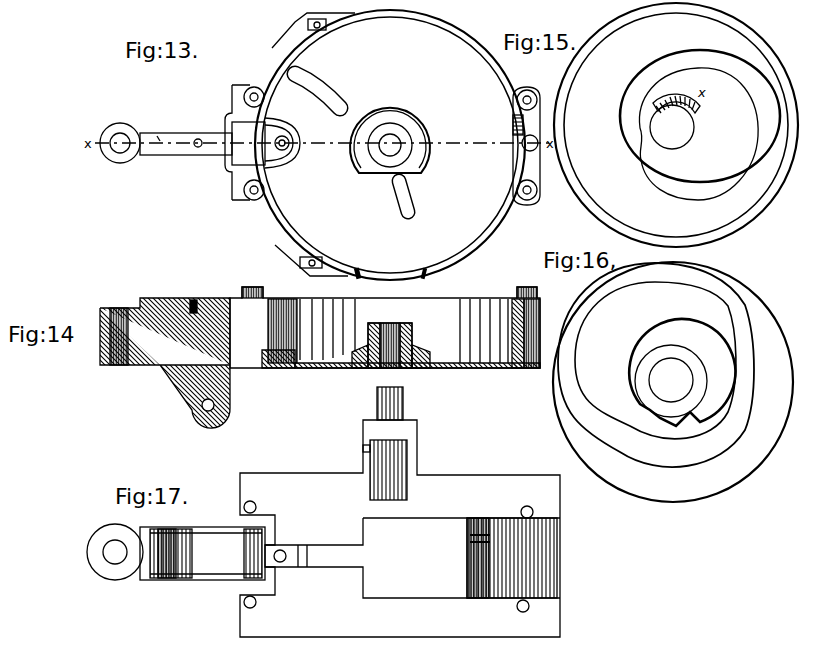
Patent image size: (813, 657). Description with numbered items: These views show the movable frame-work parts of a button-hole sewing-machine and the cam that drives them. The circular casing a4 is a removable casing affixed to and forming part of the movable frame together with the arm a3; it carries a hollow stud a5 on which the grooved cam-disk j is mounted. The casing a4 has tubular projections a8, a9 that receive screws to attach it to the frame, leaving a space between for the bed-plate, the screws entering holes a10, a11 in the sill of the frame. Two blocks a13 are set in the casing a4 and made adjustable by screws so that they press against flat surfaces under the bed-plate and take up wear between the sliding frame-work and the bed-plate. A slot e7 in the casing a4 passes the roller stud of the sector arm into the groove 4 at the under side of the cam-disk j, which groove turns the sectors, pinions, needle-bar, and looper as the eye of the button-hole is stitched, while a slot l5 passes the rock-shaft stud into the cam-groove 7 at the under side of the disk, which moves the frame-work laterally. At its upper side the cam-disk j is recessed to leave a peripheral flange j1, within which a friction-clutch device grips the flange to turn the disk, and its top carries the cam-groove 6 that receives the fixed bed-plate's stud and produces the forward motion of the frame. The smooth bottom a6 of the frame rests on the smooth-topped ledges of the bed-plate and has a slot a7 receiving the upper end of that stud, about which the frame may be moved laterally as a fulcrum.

In FIG. 14, the arm of the movable frame a3 is at (180, 380).
In FIG. 13, the circular casing a4 is at (390, 145).
In FIG. 14, the circular casing a4 is at (450, 310).
In FIG. 13, the hollow stud a5 is at (428, 151).
In FIG. 14, the hollow stud a5 is at (425, 332).
In FIG. 17, the smooth bottom of the frame a6 is at (400, 512).
In FIG. 17, the slot a7 is at (303, 556).
In FIG. 13, the tubular projection a8 is at (243, 97).
In FIG. 13, the tubular projection a9 is at (527, 87).
In FIG. 14, the tubular projection a9 is at (527, 287).
In FIG. 17, the hole a10 is at (244, 604).
In FIG. 17, the hole a11 is at (244, 507).
In FIG. 13, the adjustable block a13 is at (313, 144).
In FIG. 13, the slot e7 is at (317, 91).
In FIG. 13, the slot l5 is at (409, 199).
In FIG. 15, the cam-disk j is at (676, 125).
In FIG. 16, the cam-disk j is at (673, 382).
In FIG. 15, the flange j1 is at (766, 57).
In FIG. 16, the groove 4 is at (656, 365).
In FIG. 15, the cam-groove 6 is at (698, 135).
In FIG. 16, the cam-groove 7 is at (682, 372).